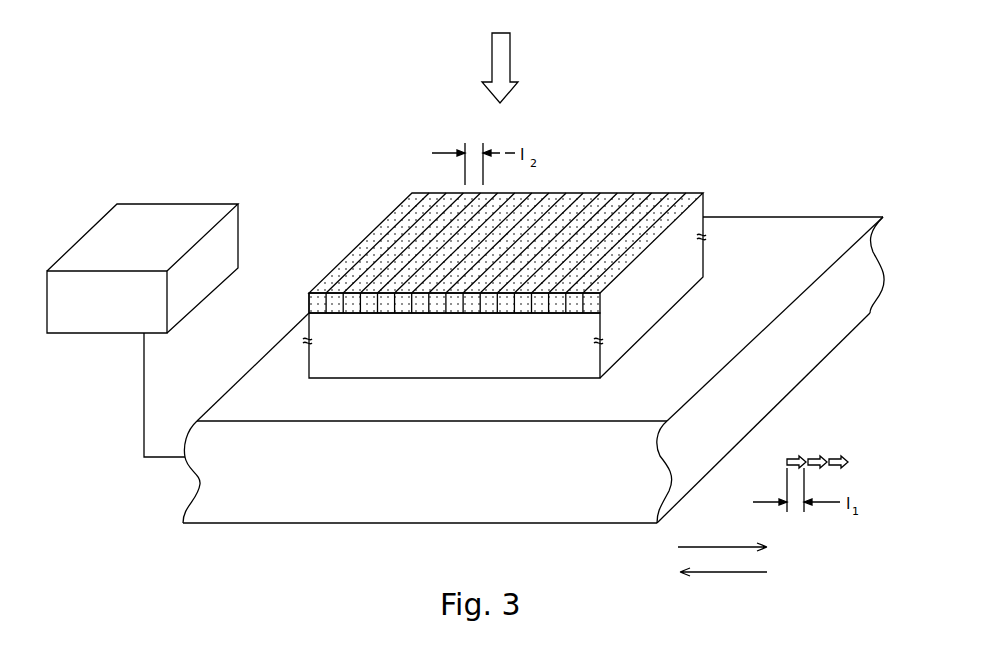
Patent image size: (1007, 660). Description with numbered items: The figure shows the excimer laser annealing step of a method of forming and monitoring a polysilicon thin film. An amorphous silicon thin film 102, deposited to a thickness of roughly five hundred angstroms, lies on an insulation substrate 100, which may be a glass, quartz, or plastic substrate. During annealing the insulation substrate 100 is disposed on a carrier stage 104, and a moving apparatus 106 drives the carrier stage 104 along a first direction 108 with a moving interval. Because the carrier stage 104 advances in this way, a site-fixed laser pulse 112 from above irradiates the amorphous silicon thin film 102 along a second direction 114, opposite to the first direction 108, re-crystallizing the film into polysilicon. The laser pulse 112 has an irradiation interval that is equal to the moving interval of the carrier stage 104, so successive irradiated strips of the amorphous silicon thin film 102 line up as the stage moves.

The insulation substrate 100 is at (458, 354).
The amorphous silicon thin film 102 is at (705, 203).
The carrier stage 104 is at (460, 483).
The moving apparatus 106 is at (122, 311).
The first direction 108 is at (705, 548).
The laser pulse 112 is at (510, 52).
The second direction 114 is at (743, 573).